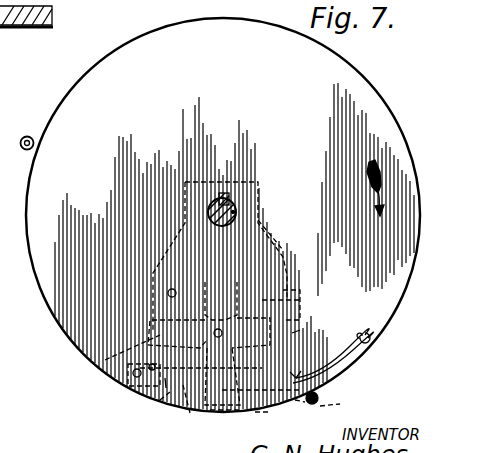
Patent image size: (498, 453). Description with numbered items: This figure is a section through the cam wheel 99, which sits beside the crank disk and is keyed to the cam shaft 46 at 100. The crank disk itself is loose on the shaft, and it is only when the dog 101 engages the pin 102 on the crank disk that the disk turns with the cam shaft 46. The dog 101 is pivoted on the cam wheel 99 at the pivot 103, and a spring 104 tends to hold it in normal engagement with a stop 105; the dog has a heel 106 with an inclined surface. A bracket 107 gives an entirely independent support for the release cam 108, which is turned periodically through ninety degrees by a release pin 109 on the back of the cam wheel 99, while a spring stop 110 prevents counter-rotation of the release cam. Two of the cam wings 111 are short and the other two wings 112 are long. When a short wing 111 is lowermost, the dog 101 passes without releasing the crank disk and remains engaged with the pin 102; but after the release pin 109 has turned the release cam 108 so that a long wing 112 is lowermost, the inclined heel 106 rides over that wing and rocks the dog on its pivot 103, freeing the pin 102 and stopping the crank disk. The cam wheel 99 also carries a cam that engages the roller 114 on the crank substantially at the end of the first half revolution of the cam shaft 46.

The cam wheel 99 is at (53, 295).
The roller 114 is at (22, 138).
The release pin 109 is at (157, 288).
The bracket 107 is at (280, 278).
The release cam 108 is at (280, 302).
The long cam wings 112 is at (283, 255).
The short cam wings 111 is at (300, 325).
The spring stop 110 is at (160, 400).
The heel 106 is at (218, 410).
The dog 101 is at (262, 412).
The key 100 is at (226, 193).
The cam shaft 46 is at (234, 213).
The spring 104 is at (355, 365).
The pin 102 is at (320, 396).
The stop 105 is at (340, 408).
The pivot 103 is at (300, 402).